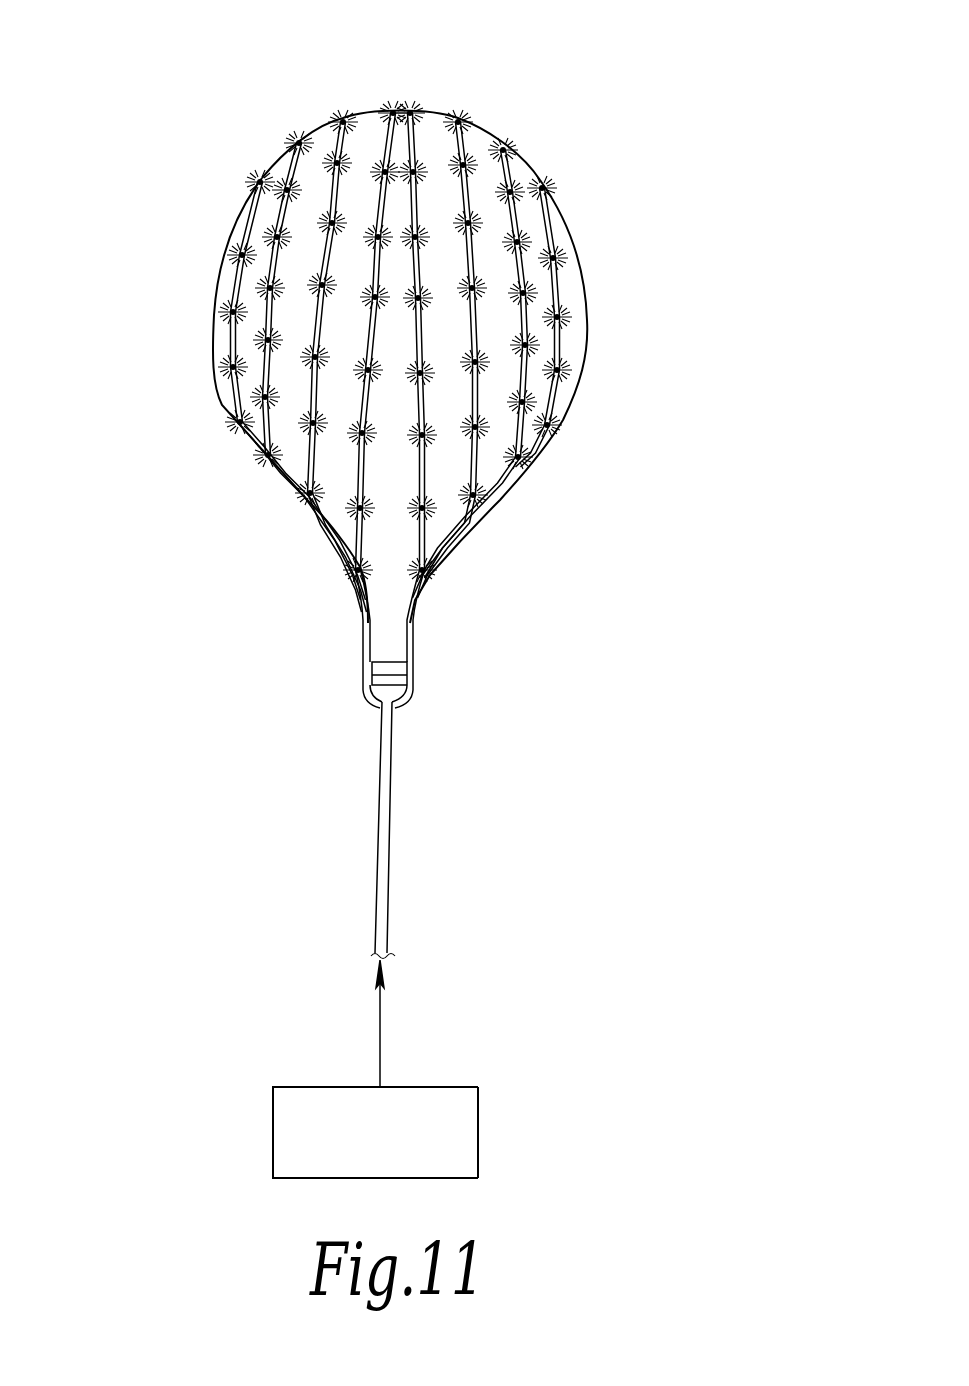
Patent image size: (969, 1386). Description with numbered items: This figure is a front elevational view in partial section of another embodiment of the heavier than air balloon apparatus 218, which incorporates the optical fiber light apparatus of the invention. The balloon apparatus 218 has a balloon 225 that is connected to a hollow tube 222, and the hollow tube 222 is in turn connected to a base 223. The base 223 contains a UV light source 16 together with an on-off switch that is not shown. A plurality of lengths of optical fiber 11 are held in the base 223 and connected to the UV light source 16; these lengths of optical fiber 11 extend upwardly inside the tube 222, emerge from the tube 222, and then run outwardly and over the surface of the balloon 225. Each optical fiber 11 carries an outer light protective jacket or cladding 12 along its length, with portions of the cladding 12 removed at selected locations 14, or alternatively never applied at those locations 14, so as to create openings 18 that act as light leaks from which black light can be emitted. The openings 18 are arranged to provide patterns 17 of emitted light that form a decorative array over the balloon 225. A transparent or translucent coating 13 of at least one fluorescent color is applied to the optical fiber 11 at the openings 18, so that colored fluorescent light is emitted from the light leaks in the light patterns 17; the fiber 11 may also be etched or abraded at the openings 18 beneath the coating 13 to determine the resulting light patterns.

The balloon apparatus 218 is at (723, 68).
The balloon 225 is at (523, 163).
The patterns of light 17 is at (287, 126).
The outer jacket or cladding 12 is at (400, 142).
The transparent or translucent coating 13 is at (382, 353).
The selected locations 14 is at (382, 353).
The openings 18 is at (330, 215).
The optical fiber 11 is at (270, 213).
The hollow tube 222 is at (387, 838).
The base 223 is at (478, 1140).
The UV light source 16 is at (428, 1092).